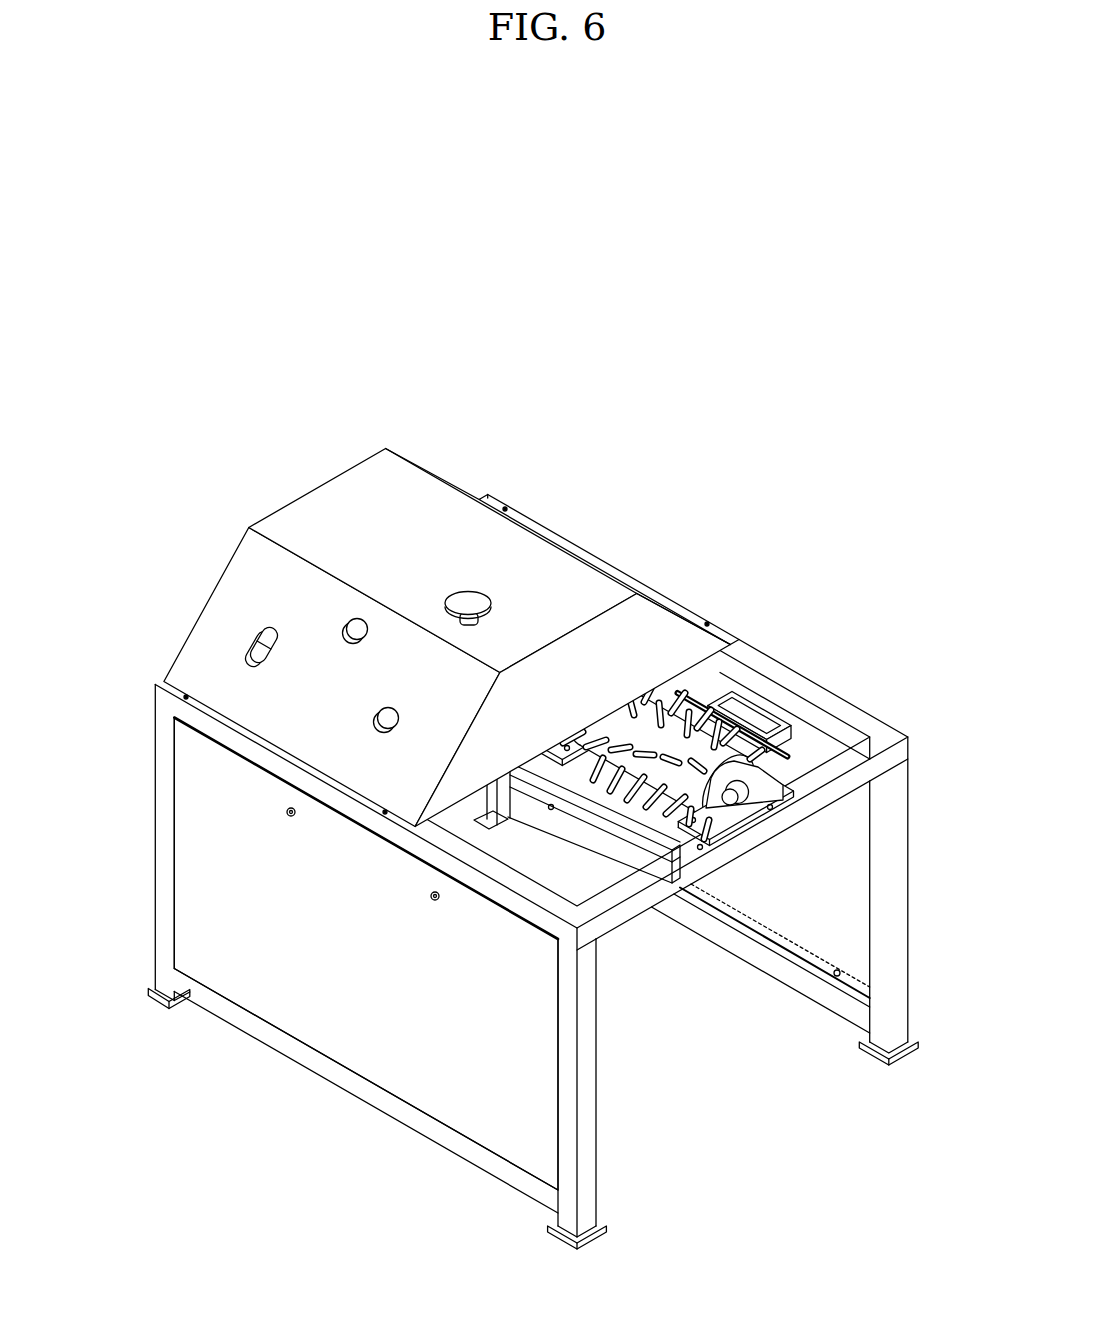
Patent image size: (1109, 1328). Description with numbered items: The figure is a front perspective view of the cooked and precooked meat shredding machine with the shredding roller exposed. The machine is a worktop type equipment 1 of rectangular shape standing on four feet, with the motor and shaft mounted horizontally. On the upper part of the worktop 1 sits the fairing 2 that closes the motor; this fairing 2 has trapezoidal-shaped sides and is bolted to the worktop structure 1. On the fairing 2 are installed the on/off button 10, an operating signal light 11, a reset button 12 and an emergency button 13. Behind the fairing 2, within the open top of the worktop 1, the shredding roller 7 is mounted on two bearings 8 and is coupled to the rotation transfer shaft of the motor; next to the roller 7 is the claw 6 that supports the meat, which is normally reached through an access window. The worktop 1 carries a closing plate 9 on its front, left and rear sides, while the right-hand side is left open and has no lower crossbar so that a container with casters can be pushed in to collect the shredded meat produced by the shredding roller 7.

The worktop type equipment 1 is at (180, 711).
The fairing 2 is at (345, 528).
The claw 6 is at (757, 707).
The shredding roller 7 is at (742, 825).
The bearings 8 is at (596, 690).
The closing plate 9 is at (352, 968).
The on/off button 10 is at (250, 641).
The operating signal light 11 is at (344, 623).
The reset button 12 is at (380, 708).
The emergency button 13 is at (460, 596).